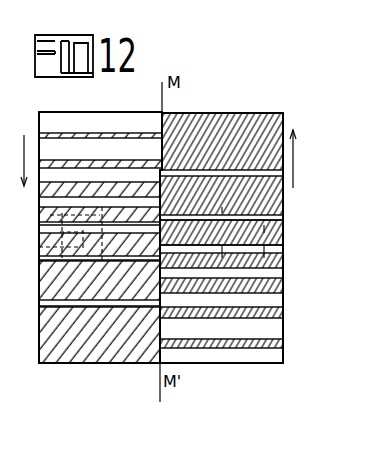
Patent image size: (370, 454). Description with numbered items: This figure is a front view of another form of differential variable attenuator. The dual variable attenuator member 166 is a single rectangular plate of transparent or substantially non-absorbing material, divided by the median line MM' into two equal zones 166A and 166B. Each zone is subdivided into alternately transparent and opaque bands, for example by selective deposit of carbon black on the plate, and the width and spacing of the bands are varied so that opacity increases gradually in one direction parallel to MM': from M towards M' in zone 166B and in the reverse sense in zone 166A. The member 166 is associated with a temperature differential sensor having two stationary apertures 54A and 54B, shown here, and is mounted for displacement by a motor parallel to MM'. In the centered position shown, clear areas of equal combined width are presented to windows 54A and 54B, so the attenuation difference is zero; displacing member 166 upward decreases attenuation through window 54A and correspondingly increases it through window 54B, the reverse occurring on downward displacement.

The dual variable attenuator member 166 is at (239, 90).
The zone 166A is at (282, 393).
The zone 166B is at (155, 393).
The stationary aperture 54A is at (247, 232).
The stationary aperture 54B is at (39, 248).